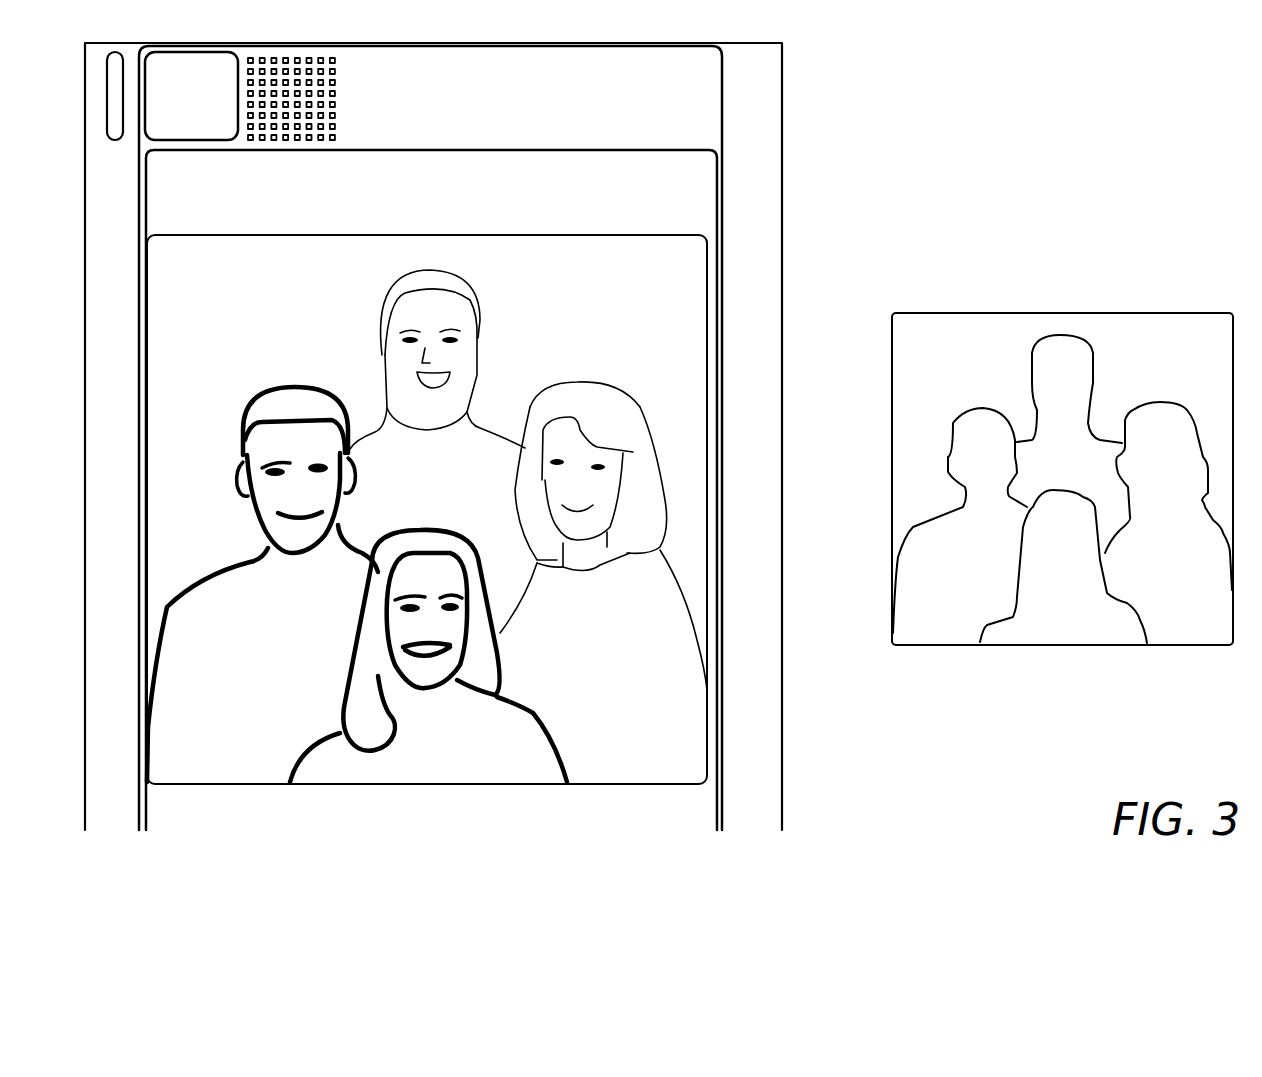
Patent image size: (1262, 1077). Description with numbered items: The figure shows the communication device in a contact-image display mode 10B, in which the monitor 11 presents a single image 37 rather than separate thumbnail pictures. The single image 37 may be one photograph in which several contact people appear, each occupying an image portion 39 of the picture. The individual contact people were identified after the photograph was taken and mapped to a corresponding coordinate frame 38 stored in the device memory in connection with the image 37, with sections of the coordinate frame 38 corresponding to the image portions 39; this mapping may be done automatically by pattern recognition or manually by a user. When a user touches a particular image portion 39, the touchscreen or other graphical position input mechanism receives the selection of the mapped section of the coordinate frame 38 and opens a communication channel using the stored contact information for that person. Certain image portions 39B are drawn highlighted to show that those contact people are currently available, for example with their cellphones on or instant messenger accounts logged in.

The communication device in contact-image display mode 10B is at (856, 98).
The monitor 11 is at (728, 171).
The single image 37 is at (469, 229).
The coordinate frame 38 is at (1023, 306).
The image portions 39 is at (485, 303).
The highlighted image portions 39B is at (297, 383).